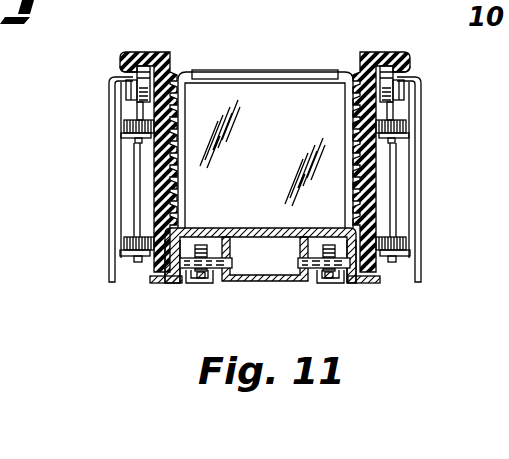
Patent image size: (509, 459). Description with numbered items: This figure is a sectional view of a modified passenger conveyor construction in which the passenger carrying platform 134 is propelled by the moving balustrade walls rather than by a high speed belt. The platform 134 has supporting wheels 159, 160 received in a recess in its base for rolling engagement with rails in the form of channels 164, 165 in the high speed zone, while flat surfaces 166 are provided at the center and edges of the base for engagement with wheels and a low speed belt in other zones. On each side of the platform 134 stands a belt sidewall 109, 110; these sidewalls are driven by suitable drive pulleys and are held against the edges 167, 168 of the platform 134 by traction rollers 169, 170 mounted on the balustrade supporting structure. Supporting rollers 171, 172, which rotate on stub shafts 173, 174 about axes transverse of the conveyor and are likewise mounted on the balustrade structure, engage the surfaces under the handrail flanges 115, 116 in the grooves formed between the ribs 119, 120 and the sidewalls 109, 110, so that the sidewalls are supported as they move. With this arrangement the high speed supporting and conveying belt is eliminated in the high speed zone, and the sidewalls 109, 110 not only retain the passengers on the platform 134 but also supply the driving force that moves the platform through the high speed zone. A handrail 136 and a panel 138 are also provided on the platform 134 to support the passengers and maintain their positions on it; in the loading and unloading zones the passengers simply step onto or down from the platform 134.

The belt sidewall 109 is at (414, 70).
The belt sidewall 110 is at (122, 58).
The handrail flange 115 is at (388, 58).
The handrail flange 116 is at (150, 58).
The rib 119 is at (406, 72).
The rib 120 is at (124, 68).
The passenger carrying platform 134 is at (263, 228).
The handrail 136 is at (211, 70).
The panel 138 is at (283, 106).
The supporting wheel 159 is at (236, 283).
The supporting wheel 160 is at (297, 283).
The channel 164 is at (202, 283).
The channel 165 is at (333, 283).
The flat surface 166 is at (160, 283).
The platform edge 167 is at (176, 283).
The platform edge 168 is at (351, 275).
The traction roller 169 is at (403, 127).
The traction roller 170 is at (125, 127).
The supporting roller 171 is at (138, 100).
The supporting roller 172 is at (392, 96).
The stub shaft 173 is at (133, 90).
The stub shaft 174 is at (400, 84).